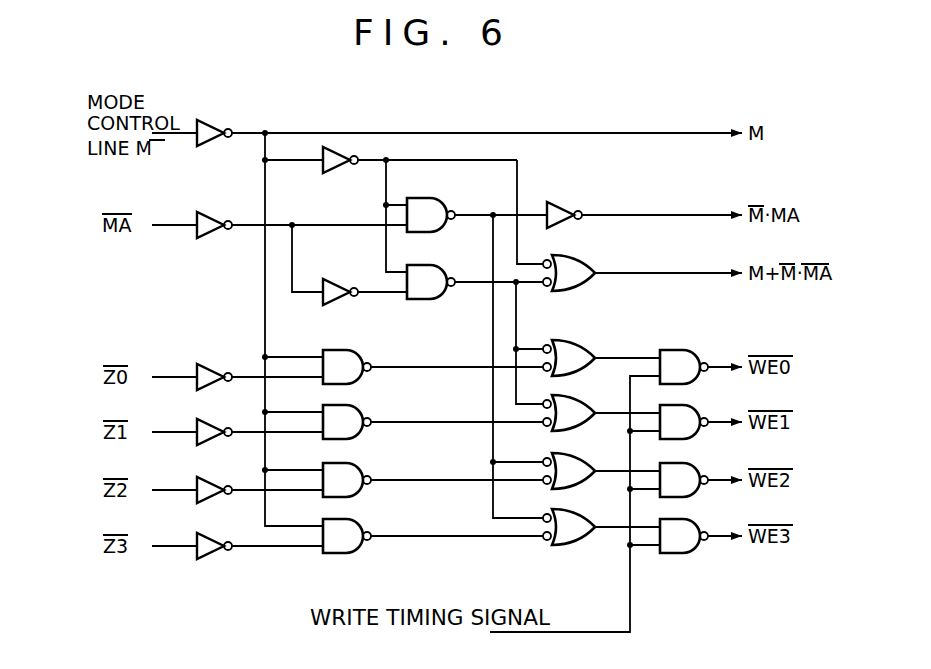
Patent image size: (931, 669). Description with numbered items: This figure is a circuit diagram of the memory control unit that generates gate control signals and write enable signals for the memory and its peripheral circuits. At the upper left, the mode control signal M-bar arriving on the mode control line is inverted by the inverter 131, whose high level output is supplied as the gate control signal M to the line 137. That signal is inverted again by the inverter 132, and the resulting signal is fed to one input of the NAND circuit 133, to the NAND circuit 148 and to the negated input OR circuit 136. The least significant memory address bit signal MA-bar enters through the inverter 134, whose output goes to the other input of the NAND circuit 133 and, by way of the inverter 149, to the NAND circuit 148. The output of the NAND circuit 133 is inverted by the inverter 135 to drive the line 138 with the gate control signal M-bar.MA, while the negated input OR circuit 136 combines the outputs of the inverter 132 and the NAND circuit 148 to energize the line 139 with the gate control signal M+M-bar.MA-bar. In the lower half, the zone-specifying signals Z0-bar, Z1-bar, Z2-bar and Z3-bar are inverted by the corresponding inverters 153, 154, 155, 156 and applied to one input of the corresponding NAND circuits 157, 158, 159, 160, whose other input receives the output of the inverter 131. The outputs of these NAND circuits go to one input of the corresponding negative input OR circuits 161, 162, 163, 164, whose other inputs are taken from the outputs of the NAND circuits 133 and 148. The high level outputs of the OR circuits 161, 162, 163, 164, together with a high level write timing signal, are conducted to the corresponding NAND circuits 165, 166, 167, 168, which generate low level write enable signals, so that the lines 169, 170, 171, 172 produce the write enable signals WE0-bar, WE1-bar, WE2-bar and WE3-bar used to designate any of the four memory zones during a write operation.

The inverter 131 is at (207, 121).
The inverter 132 is at (336, 171).
The NAND circuit 133 is at (429, 210).
The inverter 134 is at (207, 214).
The inverter 135 is at (558, 207).
The negated input OR circuit 136 is at (571, 267).
The line 137 is at (669, 130).
The line 138 is at (669, 213).
The line 139 is at (670, 271).
The NAND circuit 148 is at (430, 298).
The inverter 149 is at (336, 281).
The inverter 153 is at (207, 366).
The inverter 154 is at (207, 422).
The inverter 155 is at (206, 481).
The inverter 156 is at (206, 537).
The NAND circuit 157 is at (349, 360).
The NAND circuit 158 is at (352, 416).
The NAND circuit 159 is at (352, 474).
The NAND circuit 160 is at (352, 530).
The negative input OR circuit 161 is at (576, 350).
The negative input OR circuit 162 is at (573, 406).
The negative input OR circuit 163 is at (573, 464).
The negative input OR circuit 164 is at (573, 520).
The NAND circuit 165 is at (669, 353).
The NAND circuit 166 is at (668, 414).
The NAND circuit 167 is at (668, 472).
The NAND circuit 168 is at (690, 553).
The line 169 is at (721, 365).
The line 170 is at (723, 420).
The line 171 is at (723, 478).
The line 172 is at (723, 534).